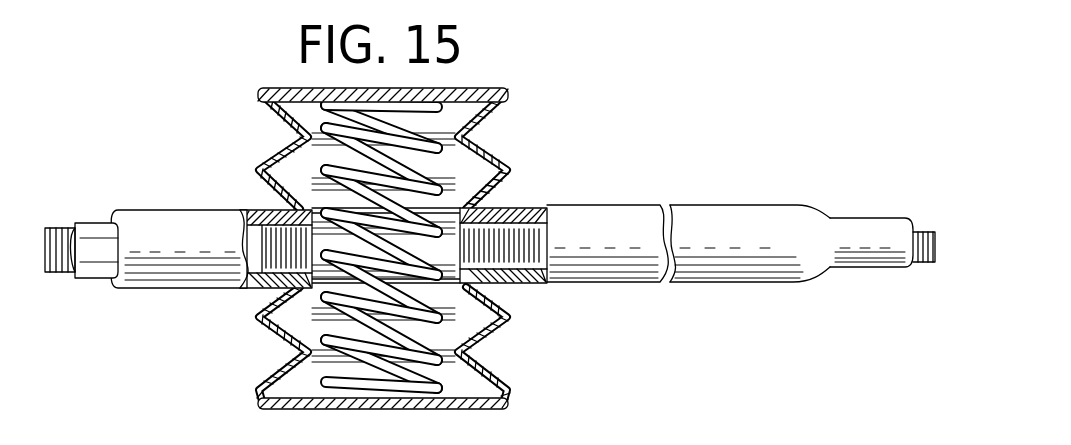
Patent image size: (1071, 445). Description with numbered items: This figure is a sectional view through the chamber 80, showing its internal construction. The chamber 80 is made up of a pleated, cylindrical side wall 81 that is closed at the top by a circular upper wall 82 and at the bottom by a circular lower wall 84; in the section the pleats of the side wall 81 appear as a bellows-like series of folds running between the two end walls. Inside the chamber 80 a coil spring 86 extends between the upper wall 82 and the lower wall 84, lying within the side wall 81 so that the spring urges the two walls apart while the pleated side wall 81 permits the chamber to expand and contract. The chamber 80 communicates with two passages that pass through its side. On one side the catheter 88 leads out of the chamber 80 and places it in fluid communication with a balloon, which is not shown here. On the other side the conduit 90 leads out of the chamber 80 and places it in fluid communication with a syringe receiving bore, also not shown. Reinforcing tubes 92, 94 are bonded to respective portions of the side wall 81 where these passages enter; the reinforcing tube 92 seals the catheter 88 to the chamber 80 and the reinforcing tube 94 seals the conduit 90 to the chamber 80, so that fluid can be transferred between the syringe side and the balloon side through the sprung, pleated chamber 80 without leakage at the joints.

The chamber 80 is at (228, 166).
The pleated, cylindrical side wall 81 is at (262, 335).
The circular upper wall 82 is at (295, 88).
The circular lower wall 84 is at (290, 403).
The coil spring 86 is at (460, 140).
The catheter 88 is at (893, 218).
The conduit 90 is at (123, 290).
The reinforcing tube 92 is at (570, 283).
The reinforcing tube 94 is at (150, 215).